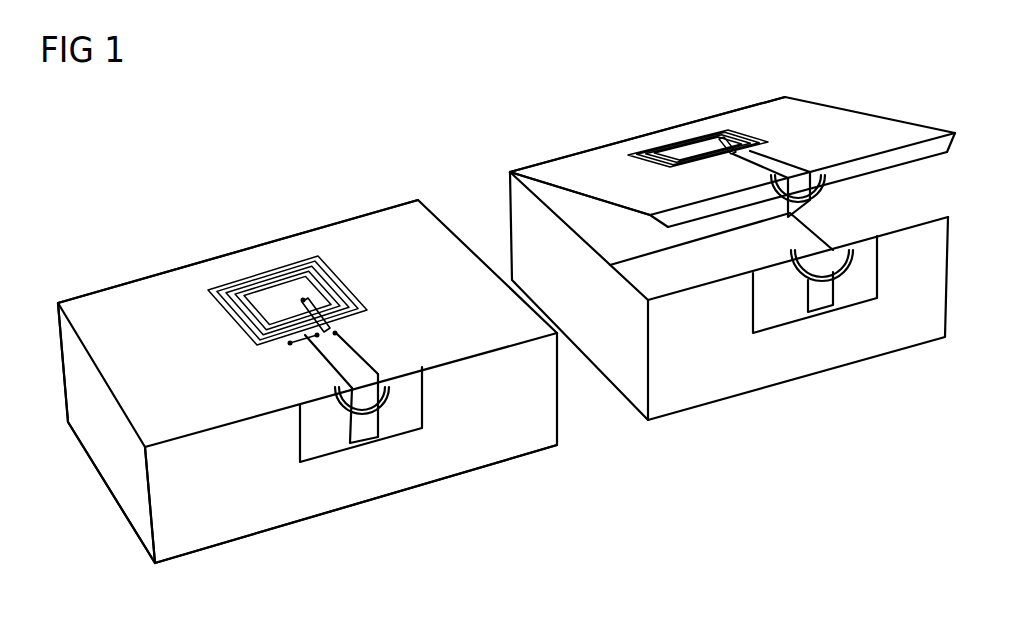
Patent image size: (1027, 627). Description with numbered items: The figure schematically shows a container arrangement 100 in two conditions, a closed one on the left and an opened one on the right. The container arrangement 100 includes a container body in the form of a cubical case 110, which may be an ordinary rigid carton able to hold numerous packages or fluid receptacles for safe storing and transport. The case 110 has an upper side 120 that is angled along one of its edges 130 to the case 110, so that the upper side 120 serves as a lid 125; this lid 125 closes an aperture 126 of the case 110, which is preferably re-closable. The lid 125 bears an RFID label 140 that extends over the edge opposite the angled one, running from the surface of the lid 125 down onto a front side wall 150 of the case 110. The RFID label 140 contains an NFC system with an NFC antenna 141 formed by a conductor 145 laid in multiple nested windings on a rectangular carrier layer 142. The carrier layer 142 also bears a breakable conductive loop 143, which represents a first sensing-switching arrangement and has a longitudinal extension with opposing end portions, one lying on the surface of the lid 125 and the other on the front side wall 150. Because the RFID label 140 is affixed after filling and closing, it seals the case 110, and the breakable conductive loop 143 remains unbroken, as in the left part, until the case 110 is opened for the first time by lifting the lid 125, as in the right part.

The container arrangement 100 is at (513, 156).
The case 110 is at (622, 380).
The upper side 120 is at (147, 290).
The lid 125 is at (143, 417).
The aperture 126 is at (902, 202).
The edge 130 is at (278, 238).
The RFID label 140 is at (258, 343).
The NFC antenna 141 is at (338, 277).
The carrier layer 142 is at (387, 353).
The breakable conductive loop 143 is at (380, 423).
The conductor 145 is at (283, 338).
The front side wall 150 is at (377, 485).